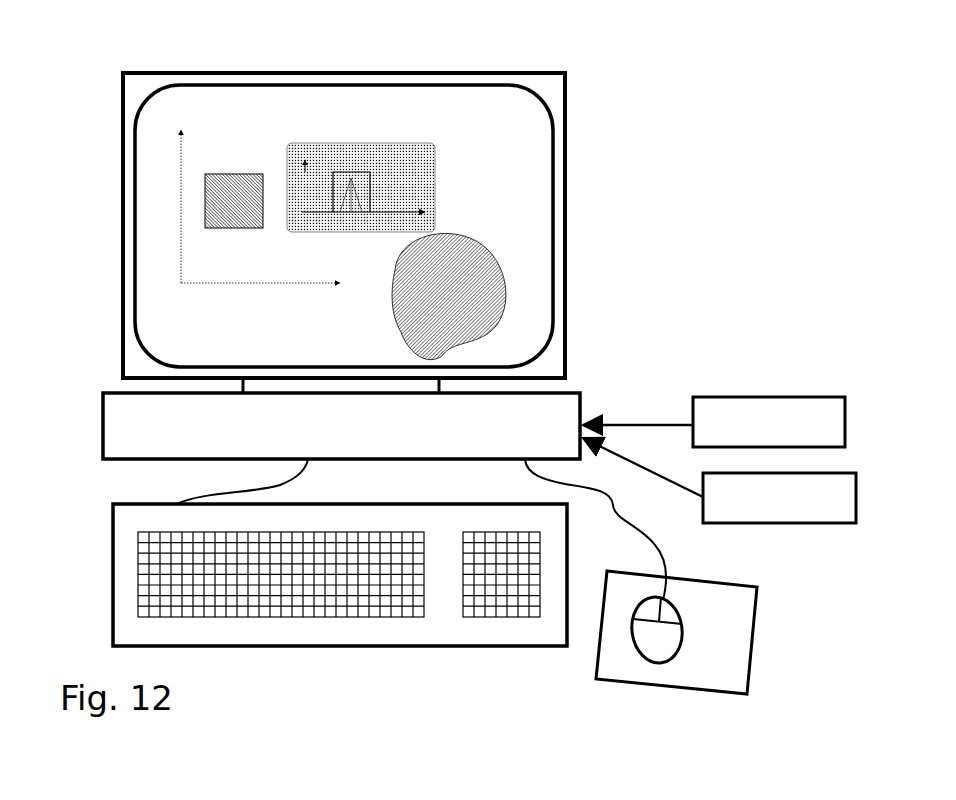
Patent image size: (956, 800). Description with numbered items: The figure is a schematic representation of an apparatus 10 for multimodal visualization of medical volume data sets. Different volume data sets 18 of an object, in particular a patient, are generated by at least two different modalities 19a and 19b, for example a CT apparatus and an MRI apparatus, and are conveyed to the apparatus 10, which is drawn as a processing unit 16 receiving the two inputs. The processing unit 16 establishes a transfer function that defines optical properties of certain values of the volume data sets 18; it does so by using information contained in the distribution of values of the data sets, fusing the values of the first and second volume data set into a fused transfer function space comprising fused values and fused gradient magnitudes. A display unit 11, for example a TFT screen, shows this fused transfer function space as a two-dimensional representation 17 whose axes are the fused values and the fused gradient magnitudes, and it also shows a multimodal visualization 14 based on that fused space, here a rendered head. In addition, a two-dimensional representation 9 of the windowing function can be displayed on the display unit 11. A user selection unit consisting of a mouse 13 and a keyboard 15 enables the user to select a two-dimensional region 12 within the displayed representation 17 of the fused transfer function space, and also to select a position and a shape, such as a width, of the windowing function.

The two-dimensional representation of the windowing function 9 is at (430, 168).
The apparatus 10 is at (692, 122).
The display unit 11 is at (264, 86).
The two-dimensional region 12 is at (232, 218).
The mouse 13 is at (670, 643).
The multimodal visualization 14 is at (478, 250).
The keyboard 15 is at (118, 582).
The processing unit 16 is at (155, 437).
The two-dimensional representation of the fused transfer function space 17 is at (181, 204).
The volume data sets 18 is at (668, 477).
The first modality 19a is at (769, 422).
The second modality 19b is at (779, 498).